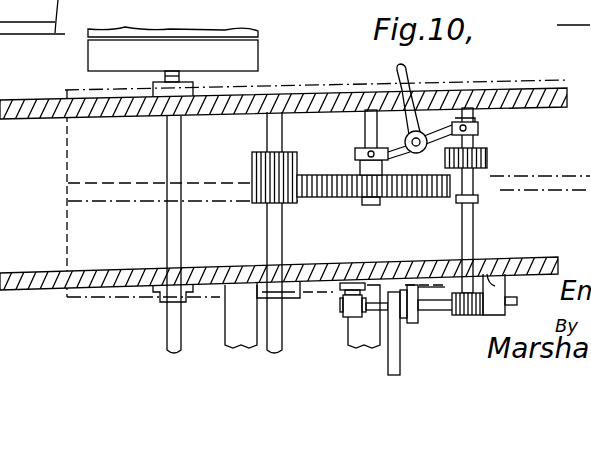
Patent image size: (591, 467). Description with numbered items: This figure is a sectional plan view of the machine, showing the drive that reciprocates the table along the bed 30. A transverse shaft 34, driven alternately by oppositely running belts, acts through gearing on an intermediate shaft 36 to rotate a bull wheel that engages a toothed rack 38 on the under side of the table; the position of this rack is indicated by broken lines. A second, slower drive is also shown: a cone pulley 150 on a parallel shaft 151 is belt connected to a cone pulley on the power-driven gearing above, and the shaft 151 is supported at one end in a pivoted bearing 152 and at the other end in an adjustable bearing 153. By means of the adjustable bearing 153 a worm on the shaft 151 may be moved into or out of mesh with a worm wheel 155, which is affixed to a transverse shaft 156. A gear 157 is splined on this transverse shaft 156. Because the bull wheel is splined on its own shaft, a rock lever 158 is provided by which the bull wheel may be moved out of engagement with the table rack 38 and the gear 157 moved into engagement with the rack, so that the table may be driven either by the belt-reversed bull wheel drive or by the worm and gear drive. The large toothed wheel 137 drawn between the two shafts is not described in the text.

The bed 30 is at (42, 290).
The transverse shaft 34 is at (167, 230).
The intermediate shaft 36 is at (283, 236).
The toothed rack 38 is at (128, 182).
The gear 137 is at (413, 198).
The cone pulley 150 is at (401, 318).
The parallel shaft 151 is at (442, 310).
The pivoted bearing 152 is at (343, 306).
The adjustable bearing 153 is at (505, 291).
The worm wheel 155 is at (467, 316).
The transverse shaft 156 is at (476, 236).
The gear 157 is at (490, 153).
The rock lever 158 is at (408, 118).